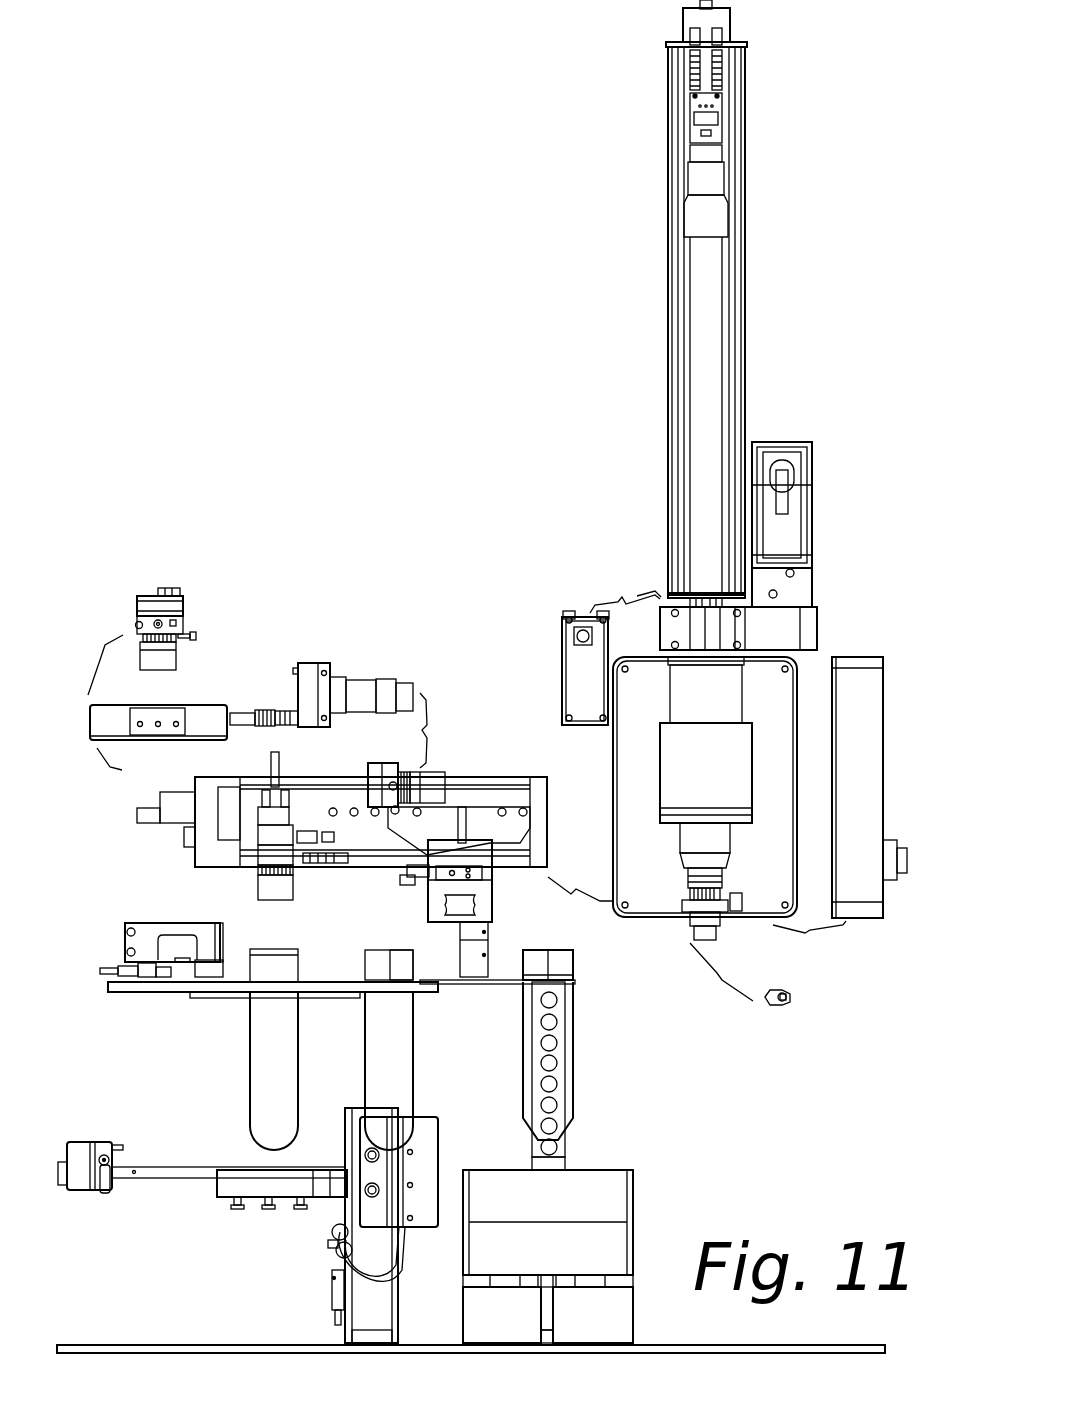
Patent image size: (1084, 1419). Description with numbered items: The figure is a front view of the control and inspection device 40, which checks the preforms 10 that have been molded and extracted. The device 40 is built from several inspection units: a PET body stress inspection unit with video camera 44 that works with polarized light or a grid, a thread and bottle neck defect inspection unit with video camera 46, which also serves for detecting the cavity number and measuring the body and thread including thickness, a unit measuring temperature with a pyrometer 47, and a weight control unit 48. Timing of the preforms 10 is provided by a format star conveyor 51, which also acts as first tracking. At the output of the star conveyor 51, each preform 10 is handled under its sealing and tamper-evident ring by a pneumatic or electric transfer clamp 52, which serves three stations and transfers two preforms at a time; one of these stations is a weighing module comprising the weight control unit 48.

The control and inspection device 40 is at (450, 497).
The PET body stress inspection unit with video camera 44 is at (432, 770).
The thread and bottle neck defect inspection unit with video camera 46 is at (312, 678).
The pyrometer 47 is at (792, 1000).
The weight control unit 48 is at (558, 1060).
The format star conveyor 51 is at (143, 987).
The transfer clamp 52 is at (507, 975).
The preform 10 is at (278, 1093).